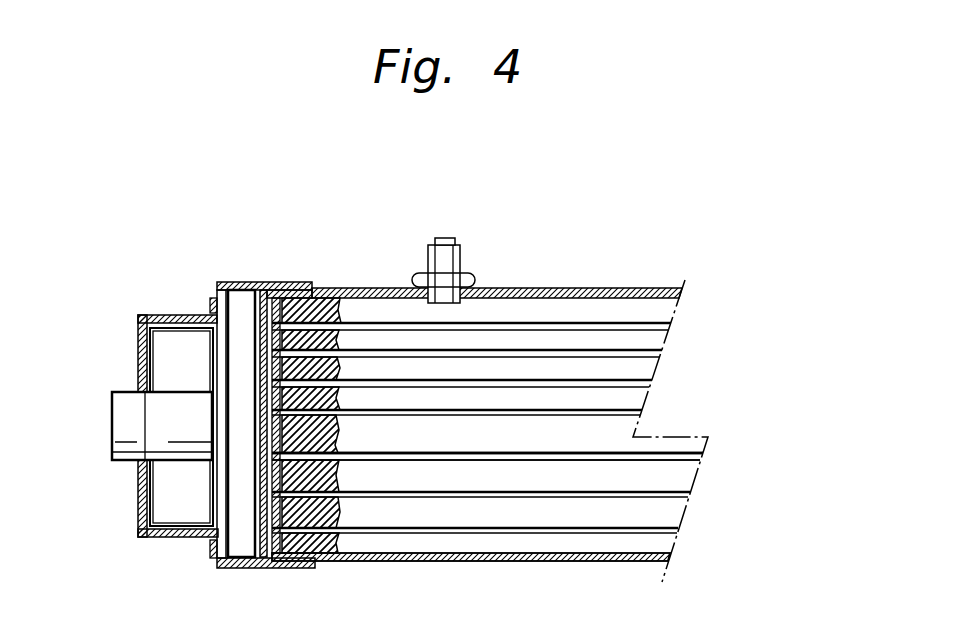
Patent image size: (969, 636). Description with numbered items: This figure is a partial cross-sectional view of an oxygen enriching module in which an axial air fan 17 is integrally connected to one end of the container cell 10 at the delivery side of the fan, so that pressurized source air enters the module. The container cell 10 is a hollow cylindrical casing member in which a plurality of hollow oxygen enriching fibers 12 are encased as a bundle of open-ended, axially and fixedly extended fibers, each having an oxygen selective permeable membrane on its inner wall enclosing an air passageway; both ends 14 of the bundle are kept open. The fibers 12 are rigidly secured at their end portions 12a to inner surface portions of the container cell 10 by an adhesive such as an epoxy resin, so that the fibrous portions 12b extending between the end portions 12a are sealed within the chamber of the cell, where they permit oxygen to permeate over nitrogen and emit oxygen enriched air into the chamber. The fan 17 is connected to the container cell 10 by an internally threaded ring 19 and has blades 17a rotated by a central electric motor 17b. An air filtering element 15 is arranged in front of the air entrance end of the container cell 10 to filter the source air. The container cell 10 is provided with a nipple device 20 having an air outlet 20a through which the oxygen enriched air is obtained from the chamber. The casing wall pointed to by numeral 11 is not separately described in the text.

The container cell 10 is at (466, 563).
The casing 11 is at (593, 566).
The hollow oxygen enriching fibers 12 is at (565, 323).
The end portions 12a is at (320, 288).
The fibrous portions 12b is at (553, 455).
The ends of the bundle 14 is at (328, 563).
The air filtering element 15 is at (265, 286).
The axial air fan 17 is at (132, 542).
The blades 17a is at (187, 500).
The central electric motor 17b is at (122, 428).
The internally threaded ring 19 is at (252, 570).
The nipple device 20 is at (430, 262).
The air outlet 20a is at (447, 240).